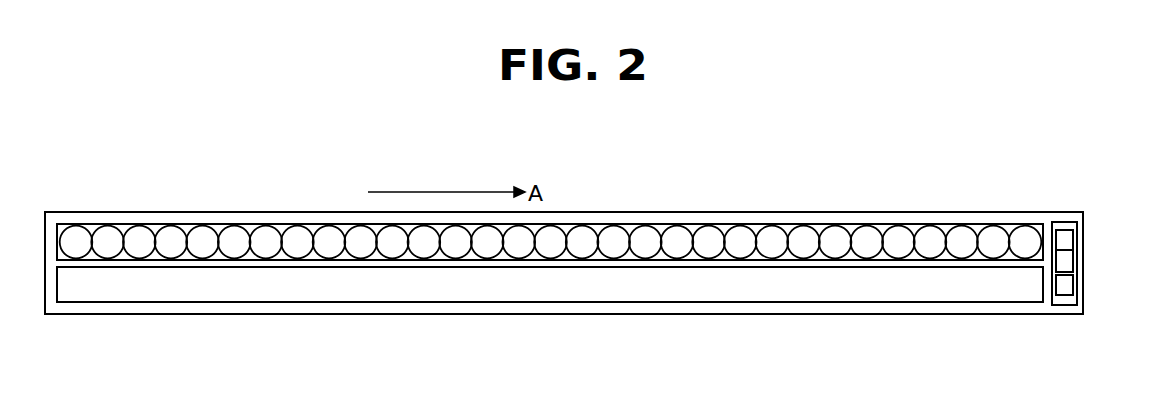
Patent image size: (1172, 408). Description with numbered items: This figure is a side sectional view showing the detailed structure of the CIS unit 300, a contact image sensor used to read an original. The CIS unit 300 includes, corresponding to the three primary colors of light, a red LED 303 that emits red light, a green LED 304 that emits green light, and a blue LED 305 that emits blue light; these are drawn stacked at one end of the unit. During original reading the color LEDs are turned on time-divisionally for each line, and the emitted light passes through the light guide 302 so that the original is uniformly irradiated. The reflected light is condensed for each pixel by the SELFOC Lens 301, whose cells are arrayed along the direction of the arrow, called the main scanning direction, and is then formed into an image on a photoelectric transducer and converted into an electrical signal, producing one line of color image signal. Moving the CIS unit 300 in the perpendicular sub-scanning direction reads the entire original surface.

The CIS unit 300 is at (598, 137).
The SELFOC Lens 301 is at (139, 240).
The light guide 302 is at (350, 283).
The red LED 303 is at (1067, 241).
The green LED 304 is at (1067, 261).
The blue LED 305 is at (1067, 282).